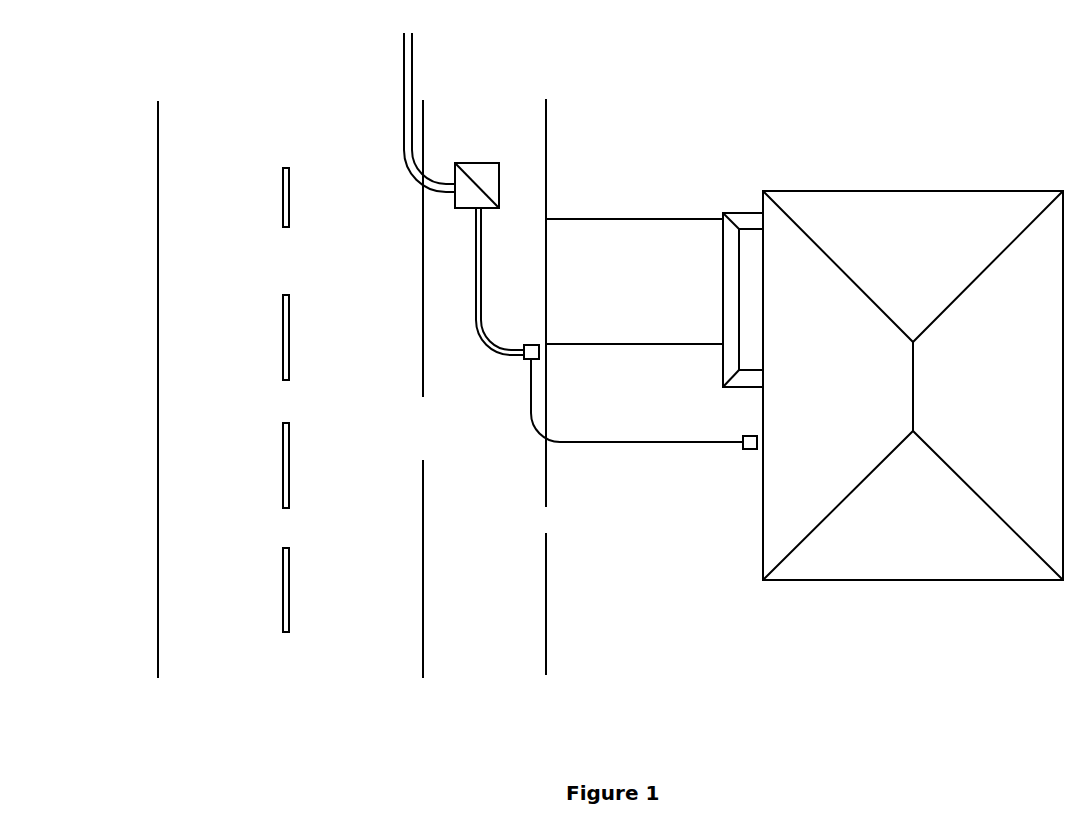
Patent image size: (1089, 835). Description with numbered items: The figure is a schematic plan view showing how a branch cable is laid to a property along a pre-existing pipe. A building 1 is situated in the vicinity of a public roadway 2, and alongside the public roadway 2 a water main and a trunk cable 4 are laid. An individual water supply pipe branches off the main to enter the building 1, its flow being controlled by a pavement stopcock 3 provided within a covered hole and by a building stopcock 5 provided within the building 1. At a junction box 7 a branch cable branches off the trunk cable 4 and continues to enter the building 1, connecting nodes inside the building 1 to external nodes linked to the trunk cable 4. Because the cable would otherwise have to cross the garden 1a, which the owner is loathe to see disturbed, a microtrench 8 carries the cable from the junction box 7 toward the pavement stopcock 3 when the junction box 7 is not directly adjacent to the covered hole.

The building 1 is at (961, 580).
The garden 1a is at (667, 610).
The public roadway 2 is at (287, 425).
The pavement stopcock 3 is at (519, 364).
The trunk cable 4 is at (395, 113).
The building stopcock 5 is at (738, 455).
The junction box 7 is at (507, 150).
The microtrench 8 is at (466, 240).